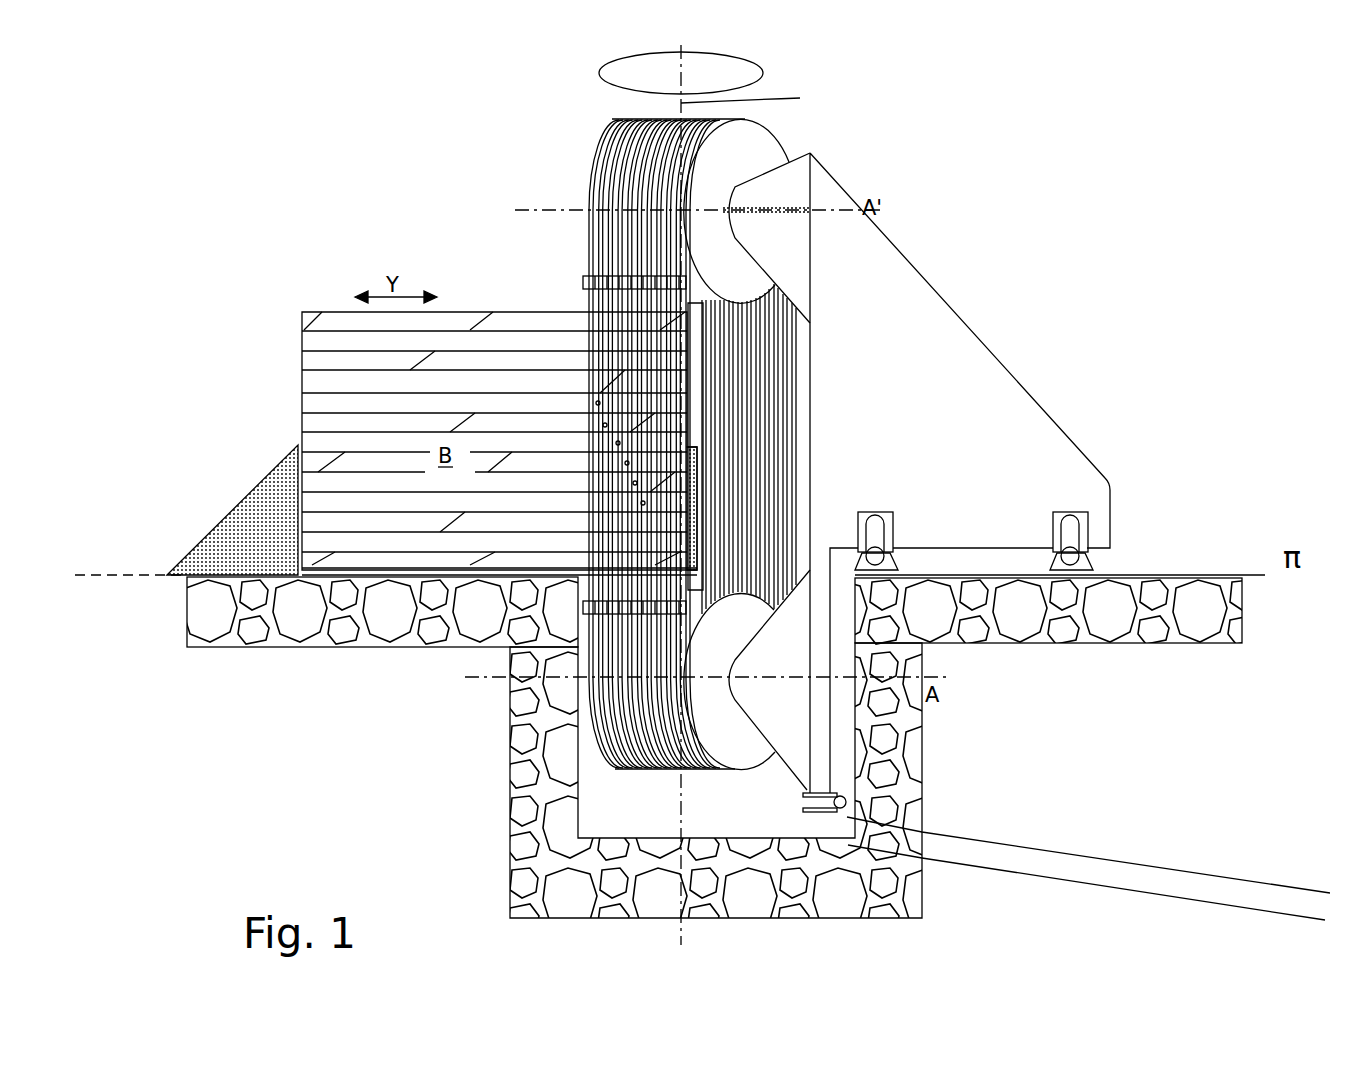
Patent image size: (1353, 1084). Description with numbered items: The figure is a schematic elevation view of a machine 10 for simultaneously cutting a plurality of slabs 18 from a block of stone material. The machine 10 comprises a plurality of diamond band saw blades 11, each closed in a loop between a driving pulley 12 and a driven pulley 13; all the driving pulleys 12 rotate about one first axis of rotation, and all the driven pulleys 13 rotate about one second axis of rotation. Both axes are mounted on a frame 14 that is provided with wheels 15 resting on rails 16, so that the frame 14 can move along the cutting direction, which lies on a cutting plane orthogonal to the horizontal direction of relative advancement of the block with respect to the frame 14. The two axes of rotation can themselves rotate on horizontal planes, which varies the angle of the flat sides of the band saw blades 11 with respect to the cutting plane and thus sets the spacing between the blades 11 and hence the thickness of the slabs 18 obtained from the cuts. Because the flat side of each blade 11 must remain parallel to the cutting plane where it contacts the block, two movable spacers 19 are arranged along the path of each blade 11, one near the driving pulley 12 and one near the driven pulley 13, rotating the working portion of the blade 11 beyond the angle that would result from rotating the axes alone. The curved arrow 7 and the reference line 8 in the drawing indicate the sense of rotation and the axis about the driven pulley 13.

The rotation direction arrow 7 is at (670, 98).
The axis of rotation 8 is at (751, 97).
The machine for simultaneous cutting of a plurality of slabs 10 is at (950, 180).
The diamond band saw blades 11 is at (600, 313).
The driving pulley 12 is at (727, 740).
The driven pulley 13 is at (747, 148).
The frame 14 is at (905, 340).
The wheels 15 is at (878, 545).
The rails 16 is at (880, 568).
The slabs 18 is at (598, 403).
The movable spacers 19 is at (583, 275).